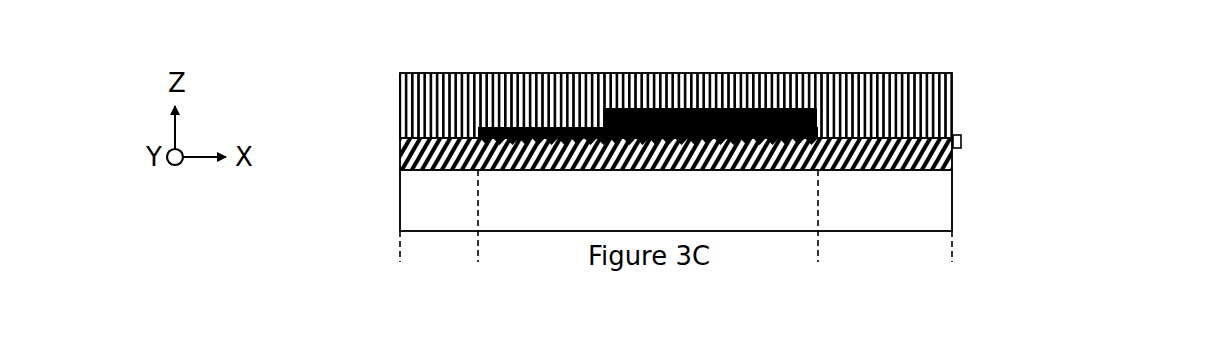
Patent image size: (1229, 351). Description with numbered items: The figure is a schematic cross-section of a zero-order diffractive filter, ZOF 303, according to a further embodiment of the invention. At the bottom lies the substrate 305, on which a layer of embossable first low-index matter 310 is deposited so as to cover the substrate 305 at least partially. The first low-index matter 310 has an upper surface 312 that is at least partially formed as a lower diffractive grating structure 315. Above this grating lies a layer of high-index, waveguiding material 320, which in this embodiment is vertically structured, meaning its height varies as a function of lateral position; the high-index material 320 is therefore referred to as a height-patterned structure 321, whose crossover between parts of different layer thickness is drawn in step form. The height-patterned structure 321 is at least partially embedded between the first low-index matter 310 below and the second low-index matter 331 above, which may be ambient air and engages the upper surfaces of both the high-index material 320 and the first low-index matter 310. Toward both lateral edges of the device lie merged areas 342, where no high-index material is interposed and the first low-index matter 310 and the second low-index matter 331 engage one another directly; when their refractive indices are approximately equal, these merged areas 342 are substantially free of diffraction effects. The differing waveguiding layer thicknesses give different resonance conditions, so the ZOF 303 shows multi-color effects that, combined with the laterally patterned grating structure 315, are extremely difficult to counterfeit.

The ZOF 303 is at (1055, 121).
The substrate 305 is at (400, 195).
The first low-index matter 310 is at (400, 155).
The upper surface 312 is at (400, 135).
The lower diffractive grating structure 315 is at (961, 141).
The high-index material 320 is at (613, 106).
The height-patterned structure 321 is at (655, 77).
The second low-index matter 331 is at (400, 92).
The merged areas 342 is at (477, 251).